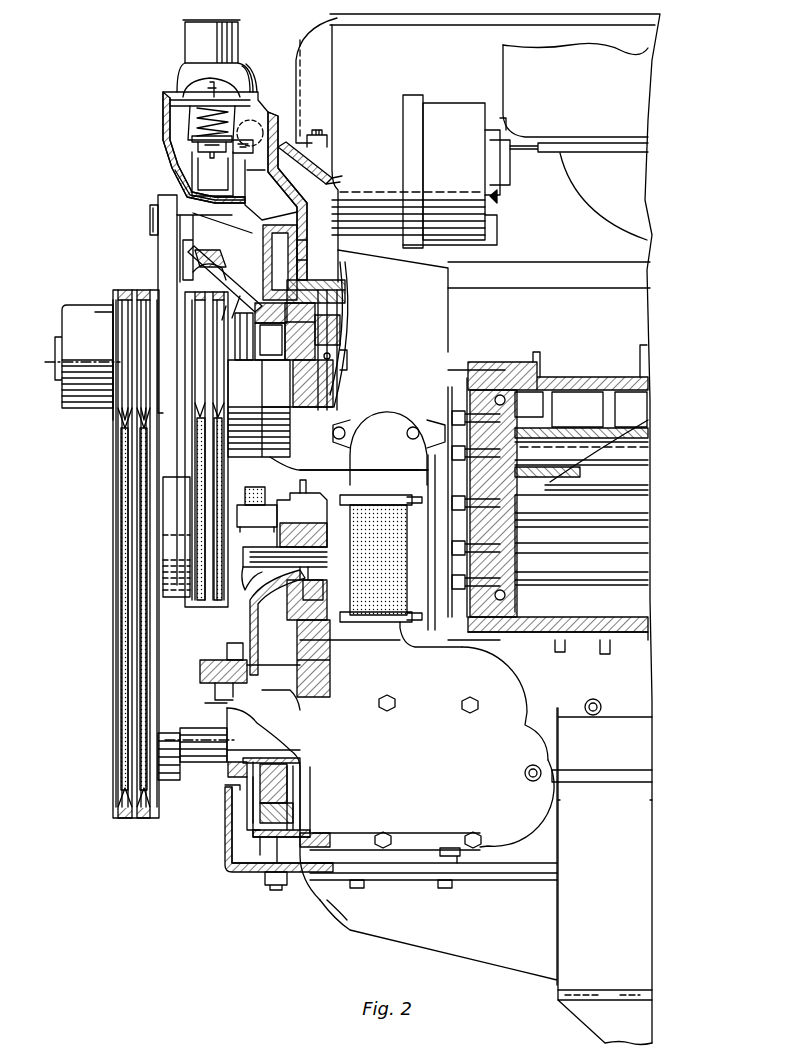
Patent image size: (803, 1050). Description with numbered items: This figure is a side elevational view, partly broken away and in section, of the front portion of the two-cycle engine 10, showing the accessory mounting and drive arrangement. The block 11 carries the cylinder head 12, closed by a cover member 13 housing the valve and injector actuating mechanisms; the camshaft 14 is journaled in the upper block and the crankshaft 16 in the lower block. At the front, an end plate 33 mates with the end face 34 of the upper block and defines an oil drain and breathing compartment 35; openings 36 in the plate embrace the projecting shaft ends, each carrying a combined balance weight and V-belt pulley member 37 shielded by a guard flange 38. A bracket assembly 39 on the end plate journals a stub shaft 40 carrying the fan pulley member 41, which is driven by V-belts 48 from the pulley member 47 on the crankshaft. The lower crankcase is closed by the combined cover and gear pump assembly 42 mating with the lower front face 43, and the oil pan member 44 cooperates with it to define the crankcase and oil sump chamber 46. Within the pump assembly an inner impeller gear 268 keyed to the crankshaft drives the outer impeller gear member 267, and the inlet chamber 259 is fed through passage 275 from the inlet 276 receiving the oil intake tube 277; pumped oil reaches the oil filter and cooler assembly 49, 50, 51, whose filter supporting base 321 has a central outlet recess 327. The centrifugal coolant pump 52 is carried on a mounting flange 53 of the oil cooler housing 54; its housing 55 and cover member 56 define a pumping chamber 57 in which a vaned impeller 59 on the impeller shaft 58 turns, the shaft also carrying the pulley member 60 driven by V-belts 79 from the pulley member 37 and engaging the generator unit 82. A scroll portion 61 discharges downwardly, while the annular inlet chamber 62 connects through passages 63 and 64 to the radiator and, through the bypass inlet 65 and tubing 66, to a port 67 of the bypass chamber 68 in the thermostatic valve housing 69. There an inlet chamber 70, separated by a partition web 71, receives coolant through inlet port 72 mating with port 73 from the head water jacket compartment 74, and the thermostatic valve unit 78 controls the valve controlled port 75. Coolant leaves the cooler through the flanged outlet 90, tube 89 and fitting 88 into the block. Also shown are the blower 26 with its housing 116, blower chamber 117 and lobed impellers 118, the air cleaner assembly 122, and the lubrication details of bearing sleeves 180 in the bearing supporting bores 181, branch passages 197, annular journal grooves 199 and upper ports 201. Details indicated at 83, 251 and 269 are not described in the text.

The engine 10 is at (640, 326).
The cylinder block 11 is at (642, 672).
The cylinder head 12 is at (336, 181).
The cover member 13 is at (295, 80).
The camshaft 14 is at (342, 320).
The crankshaft 16 is at (262, 128).
The engine charging blower 26 is at (606, 376).
The front end plate 33 is at (270, 300).
The end face 34 is at (285, 331).
The oil drain and breathing compartment 35 is at (305, 425).
The openings 36 is at (298, 357).
The combined balance weight and V-belt pulley member 37 is at (255, 318).
The guard flange 38 is at (272, 259).
The bracket assembly 39 is at (166, 206).
The stub shaft 40 is at (52, 360).
The V-belt pulley member 41 is at (95, 312).
The combined cover and gear pump assembly 42 is at (230, 800).
The lower front face 43 is at (293, 812).
The oil pan member 44 is at (492, 950).
The crankcase and oil sump chamber 46 is at (328, 902).
The pulley member 47 is at (120, 700).
The V-belts 48 is at (130, 470).
The oil filter and cooler assembly 49 is at (527, 697).
The oil filter and cooler assembly 50 is at (632, 909).
The oil filter and cooler assembly 51 is at (514, 820).
The centrifugal coolant pump 52 is at (338, 463).
The mounting boss or flange 53 is at (222, 669).
The oil cooler housing 54 is at (520, 748).
The pump housing 55 is at (347, 644).
The cover member 56 is at (338, 565).
The pumping chamber 57 is at (330, 578).
The impeller shaft 58 is at (347, 555).
The vaned impeller 59 is at (345, 592).
The V-belt pulley member 60 is at (178, 575).
The scroll portion 61 is at (327, 501).
The annular inlet chamber 62 is at (290, 592).
The passage 63 is at (312, 663).
The passage 64 is at (292, 723).
The radiator bypass inlet 65 is at (200, 48).
The tubing 66 is at (260, 497).
The port 67 is at (293, 128).
The bypass chamber 68 is at (192, 172).
The thermostatic valve housing 69 is at (167, 108).
The inlet chamber 70 is at (265, 182).
The partition web 71 is at (236, 172).
The inlet port 72 is at (305, 226).
The port 73 is at (300, 170).
The cylinder head water jacket compartment 74 is at (330, 270).
The valve controlled port 75 is at (243, 153).
The thermostatic valve unit 78 is at (185, 142).
The V-belts 79 is at (195, 258).
The generator unit 82 is at (415, 110).
The block face 83 is at (437, 293).
The fitting 88 is at (385, 415).
The tube 89 is at (410, 556).
The flanged coolant outlet 90 is at (418, 653).
The blower housing 116 is at (497, 366).
The blower chamber 117 is at (592, 598).
The lobed impellers 118 is at (553, 388).
The air cleaner assembly 122 is at (512, 87).
The bearing sleeves 180 is at (338, 308).
The bearing supporting bores 181 is at (347, 366).
The branch passages 197 is at (338, 385).
The annular groove 199 is at (261, 336).
The ports 201 is at (348, 297).
The seal 251 is at (253, 778).
The inlet chamber 259 is at (255, 790).
The impeller gear member 267 is at (305, 797).
The inner impeller gear 268 is at (300, 783).
The lip 269 is at (300, 770).
The passage 275 is at (235, 830).
The inlet 276 is at (257, 875).
The oil intake tube 277 is at (315, 842).
The filter supporting base 321 is at (635, 739).
The central outlet chamber 327 is at (635, 826).